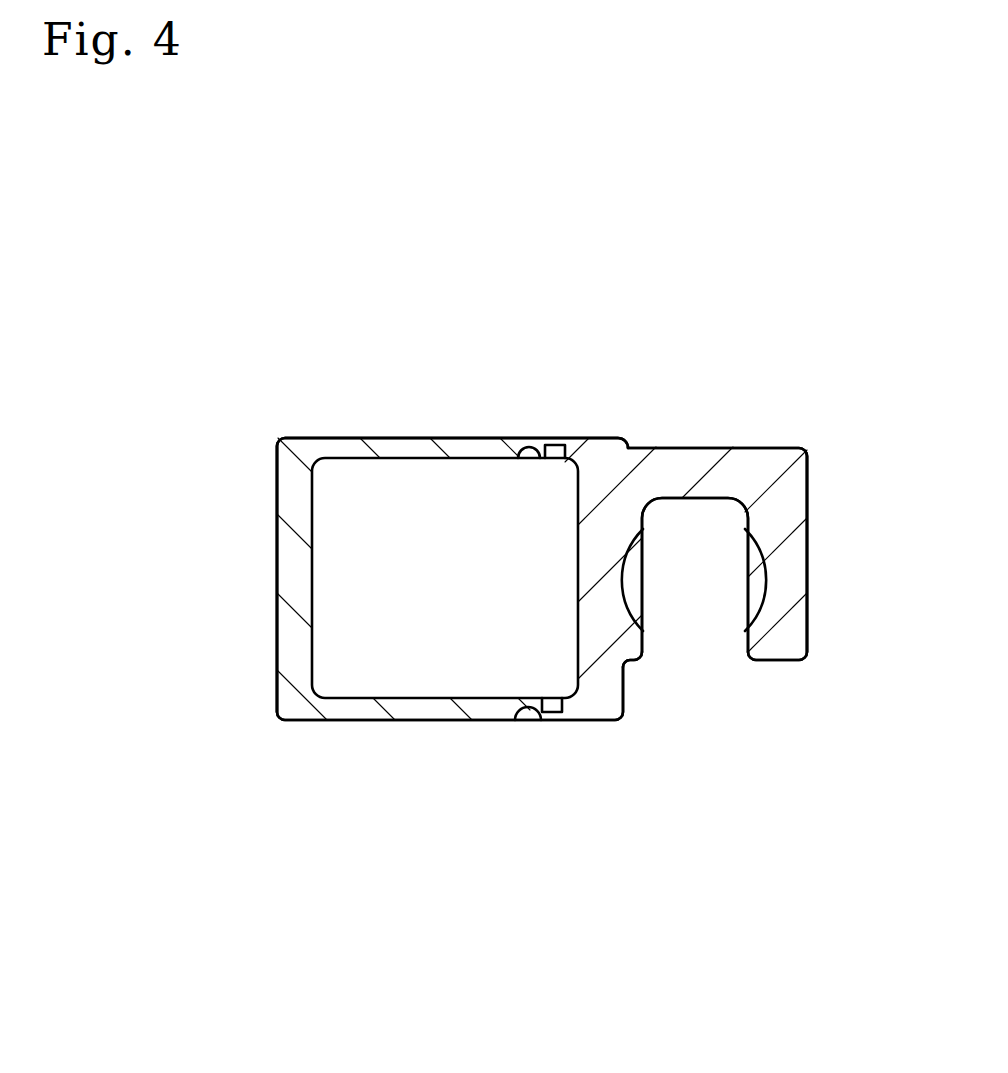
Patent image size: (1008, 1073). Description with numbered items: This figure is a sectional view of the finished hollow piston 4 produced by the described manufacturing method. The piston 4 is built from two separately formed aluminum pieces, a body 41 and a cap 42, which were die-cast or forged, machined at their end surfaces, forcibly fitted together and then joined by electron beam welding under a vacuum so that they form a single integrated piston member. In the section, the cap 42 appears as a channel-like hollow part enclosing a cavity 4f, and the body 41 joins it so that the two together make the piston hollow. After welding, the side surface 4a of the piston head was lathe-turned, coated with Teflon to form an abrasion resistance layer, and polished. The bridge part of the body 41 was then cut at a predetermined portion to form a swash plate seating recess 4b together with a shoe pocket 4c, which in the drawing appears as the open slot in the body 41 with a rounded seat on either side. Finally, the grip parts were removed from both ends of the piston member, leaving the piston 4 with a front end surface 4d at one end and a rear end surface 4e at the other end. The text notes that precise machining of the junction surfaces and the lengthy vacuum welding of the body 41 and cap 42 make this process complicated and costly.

The piston 4 is at (248, 773).
The body 41 is at (677, 446).
The cap 42 is at (300, 437).
The side surface 4a is at (393, 437).
The swash plate seating recess 4b is at (702, 600).
The shoe pocket 4c is at (767, 582).
The front end surface 4d is at (277, 616).
The rear end surface 4e is at (807, 545).
The cavity 4f is at (443, 673).